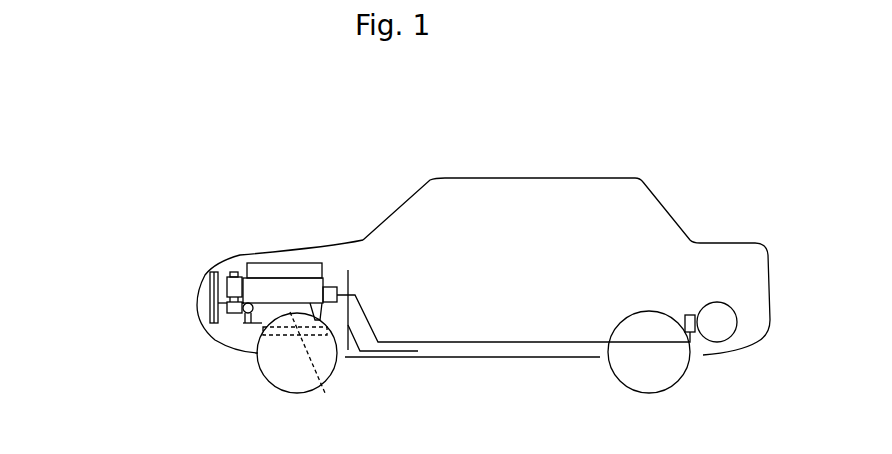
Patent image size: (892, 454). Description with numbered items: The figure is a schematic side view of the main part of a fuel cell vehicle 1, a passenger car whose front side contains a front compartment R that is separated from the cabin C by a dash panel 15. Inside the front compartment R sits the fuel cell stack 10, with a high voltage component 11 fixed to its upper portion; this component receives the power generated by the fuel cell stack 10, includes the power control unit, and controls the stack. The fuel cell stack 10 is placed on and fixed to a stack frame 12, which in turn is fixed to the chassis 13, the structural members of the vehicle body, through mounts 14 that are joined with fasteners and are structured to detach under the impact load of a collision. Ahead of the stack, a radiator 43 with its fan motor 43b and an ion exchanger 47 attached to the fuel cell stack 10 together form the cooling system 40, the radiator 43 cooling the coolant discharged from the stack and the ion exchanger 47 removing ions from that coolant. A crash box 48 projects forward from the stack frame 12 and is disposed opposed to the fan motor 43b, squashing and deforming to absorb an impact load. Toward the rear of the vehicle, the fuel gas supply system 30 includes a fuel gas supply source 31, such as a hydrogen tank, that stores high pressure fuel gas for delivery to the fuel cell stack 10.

The fuel cell vehicle 1 is at (513, 149).
The cabin C is at (515, 242).
The front compartment R is at (287, 243).
The fuel cell stack 10 is at (290, 283).
The high voltage component 11 is at (275, 270).
The stack frame 12 is at (270, 350).
The chassis 13 is at (322, 369).
The mounts 14 is at (290, 307).
The dash panel 15 is at (352, 272).
The fuel gas supply system 30 is at (527, 338).
The fuel gas supply source 31 is at (716, 308).
The cooling system 40 is at (193, 327).
The radiator 43 is at (213, 287).
The fan motor 43b is at (224, 305).
The ion exchanger 47 is at (230, 278).
The crash box 48 is at (226, 305).